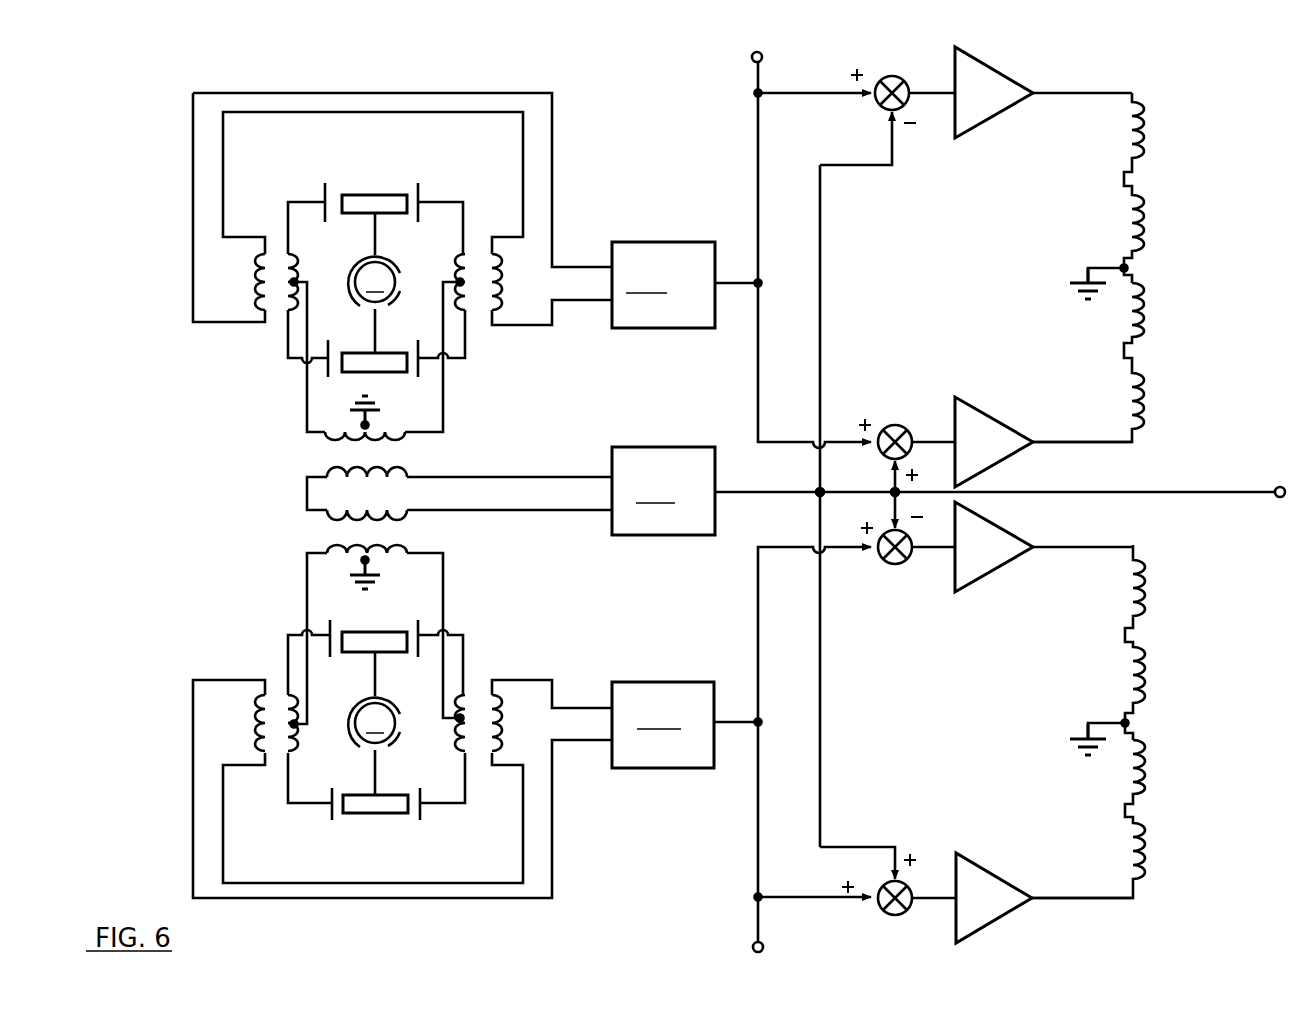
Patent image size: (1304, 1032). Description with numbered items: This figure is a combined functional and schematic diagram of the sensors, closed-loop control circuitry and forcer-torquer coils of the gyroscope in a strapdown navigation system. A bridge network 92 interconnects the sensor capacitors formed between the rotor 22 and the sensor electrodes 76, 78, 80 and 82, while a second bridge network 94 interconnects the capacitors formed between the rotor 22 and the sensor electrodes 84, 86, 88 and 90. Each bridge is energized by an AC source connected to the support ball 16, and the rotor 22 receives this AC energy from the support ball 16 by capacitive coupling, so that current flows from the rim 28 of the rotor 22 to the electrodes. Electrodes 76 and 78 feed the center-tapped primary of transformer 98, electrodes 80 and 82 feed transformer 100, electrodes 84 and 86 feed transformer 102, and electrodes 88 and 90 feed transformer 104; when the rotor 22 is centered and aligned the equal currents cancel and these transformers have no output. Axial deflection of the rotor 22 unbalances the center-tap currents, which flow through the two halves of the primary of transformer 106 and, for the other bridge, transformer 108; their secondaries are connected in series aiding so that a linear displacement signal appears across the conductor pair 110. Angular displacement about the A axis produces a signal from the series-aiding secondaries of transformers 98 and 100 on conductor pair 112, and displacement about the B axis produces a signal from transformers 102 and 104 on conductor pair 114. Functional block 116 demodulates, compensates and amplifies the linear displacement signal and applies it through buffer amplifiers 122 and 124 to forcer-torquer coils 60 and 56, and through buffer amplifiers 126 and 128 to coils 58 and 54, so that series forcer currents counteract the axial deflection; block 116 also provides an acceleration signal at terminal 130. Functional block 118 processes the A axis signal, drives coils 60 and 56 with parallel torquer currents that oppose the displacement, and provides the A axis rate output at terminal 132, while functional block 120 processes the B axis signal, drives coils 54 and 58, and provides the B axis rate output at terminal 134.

The support ball 16 is at (374, 502).
The rotor 22 is at (377, 236).
The rim 28 is at (378, 202).
The forcer-torquer coil 54 is at (1140, 617).
The forcer-torquer coil 56 is at (1140, 335).
The forcer-torquer coil 58 is at (1140, 773).
The forcer-torquer coil 60 is at (1140, 160).
The sensor electrode 76 is at (421, 196).
The sensor electrode 78 is at (423, 369).
The sensor electrode 80 is at (322, 195).
The sensor electrode 82 is at (325, 370).
The sensor electrode 84 is at (423, 808).
The sensor electrode 86 is at (425, 633).
The sensor electrode 88 is at (330, 810).
The sensor electrode 90 is at (333, 629).
The bridge network 92 is at (490, 196).
The bridge network 94 is at (470, 814).
The transformer 98 is at (476, 309).
The transformer 100 is at (274, 313).
The transformer 102 is at (481, 690).
The transformer 104 is at (275, 690).
The transformer 106 is at (326, 448).
The transformer 108 is at (325, 535).
The conductor pair 110 is at (568, 477).
The conductor pair 112 is at (579, 266).
The conductor pair 114 is at (573, 708).
The functional block 116 is at (663, 491).
The functional block 118 is at (663, 285).
The functional block 120 is at (663, 725).
The buffer amplifier 122 is at (968, 82).
The buffer amplifier 124 is at (975, 435).
The buffer amplifier 126 is at (985, 548).
The buffer amplifier 128 is at (986, 900).
The terminal 130 is at (1200, 492).
The terminal 132 is at (752, 57).
The terminal 134 is at (753, 948).